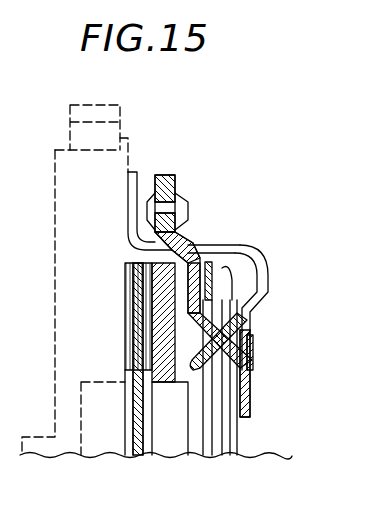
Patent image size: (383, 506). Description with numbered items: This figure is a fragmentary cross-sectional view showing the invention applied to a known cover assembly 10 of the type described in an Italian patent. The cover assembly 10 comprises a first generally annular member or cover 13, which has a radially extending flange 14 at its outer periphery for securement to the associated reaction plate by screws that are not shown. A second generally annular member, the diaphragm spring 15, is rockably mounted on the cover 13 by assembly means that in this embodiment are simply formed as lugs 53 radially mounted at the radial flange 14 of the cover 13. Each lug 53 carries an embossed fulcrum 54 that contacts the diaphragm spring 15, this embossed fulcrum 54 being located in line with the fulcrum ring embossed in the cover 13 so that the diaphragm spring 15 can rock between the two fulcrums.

The cover assembly 10 is at (237, 223).
The cover 13 is at (262, 250).
The radially extending flange 14 is at (162, 175).
The diaphragm spring 15 is at (221, 272).
The lugs 53 is at (160, 287).
The embossed fulcrum 54 is at (225, 374).